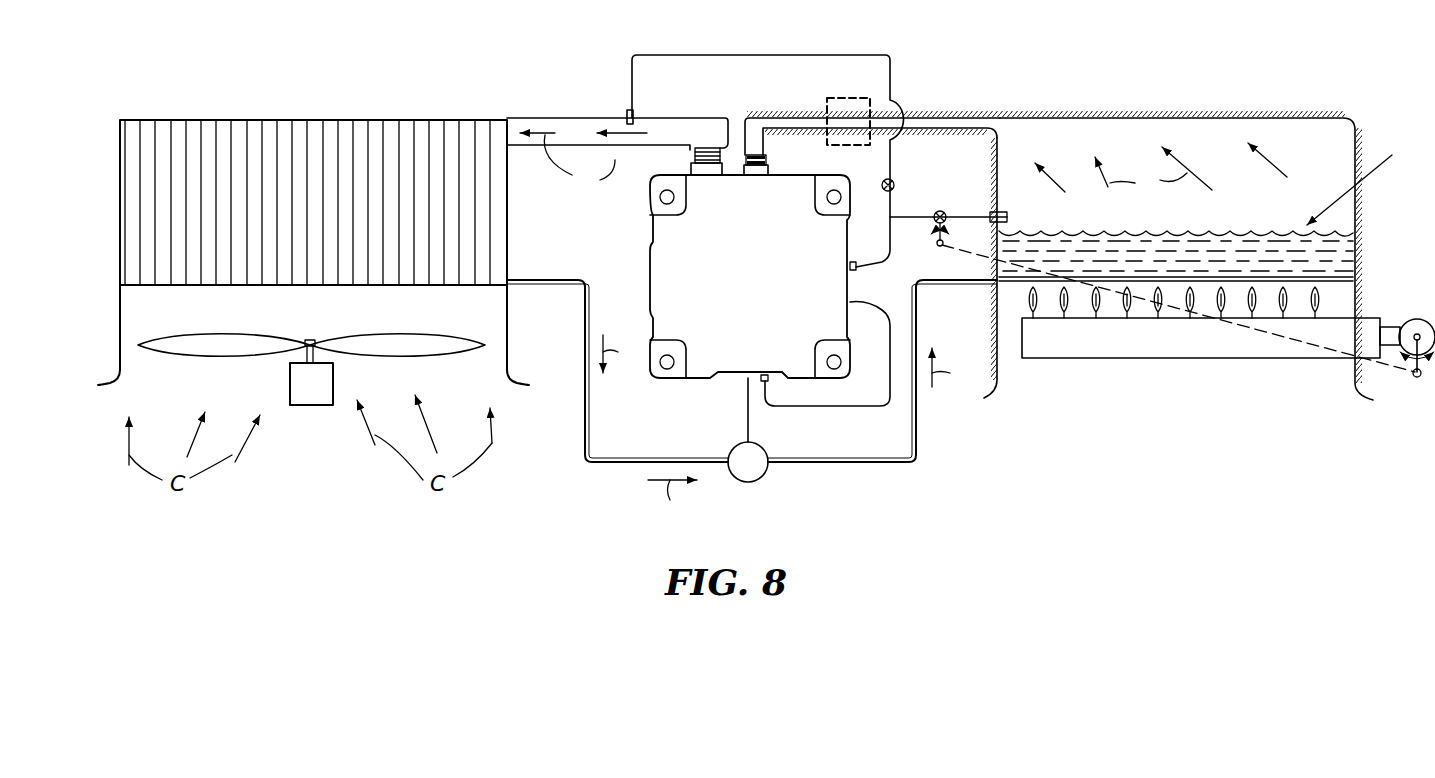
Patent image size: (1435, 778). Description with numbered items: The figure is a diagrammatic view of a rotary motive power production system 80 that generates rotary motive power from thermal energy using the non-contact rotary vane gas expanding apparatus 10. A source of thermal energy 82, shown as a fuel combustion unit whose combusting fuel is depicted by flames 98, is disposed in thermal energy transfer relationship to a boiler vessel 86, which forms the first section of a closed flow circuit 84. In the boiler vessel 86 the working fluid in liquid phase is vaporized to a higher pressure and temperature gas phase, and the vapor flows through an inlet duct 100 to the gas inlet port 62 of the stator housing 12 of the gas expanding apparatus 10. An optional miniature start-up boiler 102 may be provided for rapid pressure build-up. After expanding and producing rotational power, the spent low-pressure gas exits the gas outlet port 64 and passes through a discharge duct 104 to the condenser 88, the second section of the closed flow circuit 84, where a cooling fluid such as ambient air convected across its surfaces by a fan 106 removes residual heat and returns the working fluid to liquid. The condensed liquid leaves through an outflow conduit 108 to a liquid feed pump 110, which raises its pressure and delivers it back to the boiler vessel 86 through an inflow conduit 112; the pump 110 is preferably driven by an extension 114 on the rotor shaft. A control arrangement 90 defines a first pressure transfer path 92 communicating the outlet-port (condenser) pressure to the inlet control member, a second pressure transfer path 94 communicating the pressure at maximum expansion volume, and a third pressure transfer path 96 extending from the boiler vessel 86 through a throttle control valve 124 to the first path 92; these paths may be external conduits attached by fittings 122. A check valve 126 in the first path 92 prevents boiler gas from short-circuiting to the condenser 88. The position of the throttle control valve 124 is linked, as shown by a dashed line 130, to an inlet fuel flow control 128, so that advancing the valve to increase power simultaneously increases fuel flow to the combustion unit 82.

The non-contact rotary vane gas expanding apparatus 10 is at (709, 313).
The stator housing 12 is at (652, 268).
The gas inlet port 62 is at (758, 176).
The gas outlet port 64 is at (702, 177).
The rotary motive power production system 80 is at (1165, 60).
The source of thermal energy 82 is at (1038, 358).
The closed flow circuit 84 is at (1325, 107).
The boiler vessel 86 is at (1253, 108).
The condenser 88 is at (292, 116).
The control arrangement 90 is at (898, 292).
The first fluid pressure transfer path 92 is at (717, 55).
The second fluid pressure transfer path 94 is at (793, 407).
The third pressure transfer path 96 is at (910, 217).
The flames 98 is at (1127, 310).
The inlet duct 100 is at (940, 115).
The start-up boiler 102 is at (837, 100).
The discharge duct 104 is at (580, 118).
The fan 106 is at (315, 390).
The outflow conduit 108 is at (582, 312).
The liquid feed pump 110 is at (753, 472).
The inflow conduit 112 is at (872, 462).
The extension on the rotor shaft 114 is at (742, 407).
The fittings 122 is at (633, 110).
The throttle control valve 124 is at (940, 246).
The check valve 126 is at (893, 178).
The inlet fuel flow control 128 is at (1417, 377).
The dashed line 130 is at (1313, 358).